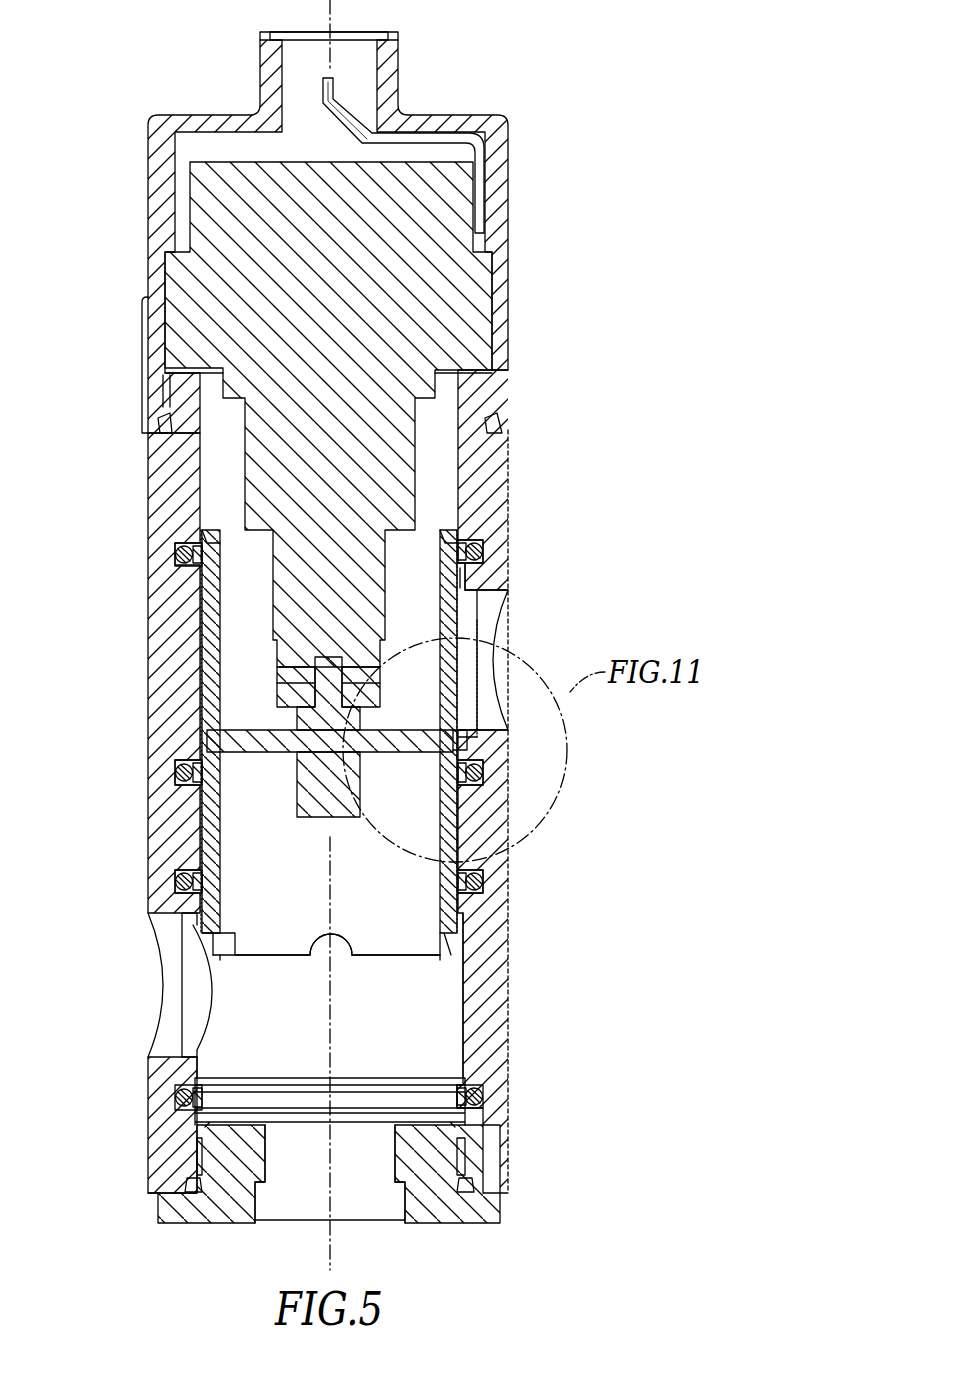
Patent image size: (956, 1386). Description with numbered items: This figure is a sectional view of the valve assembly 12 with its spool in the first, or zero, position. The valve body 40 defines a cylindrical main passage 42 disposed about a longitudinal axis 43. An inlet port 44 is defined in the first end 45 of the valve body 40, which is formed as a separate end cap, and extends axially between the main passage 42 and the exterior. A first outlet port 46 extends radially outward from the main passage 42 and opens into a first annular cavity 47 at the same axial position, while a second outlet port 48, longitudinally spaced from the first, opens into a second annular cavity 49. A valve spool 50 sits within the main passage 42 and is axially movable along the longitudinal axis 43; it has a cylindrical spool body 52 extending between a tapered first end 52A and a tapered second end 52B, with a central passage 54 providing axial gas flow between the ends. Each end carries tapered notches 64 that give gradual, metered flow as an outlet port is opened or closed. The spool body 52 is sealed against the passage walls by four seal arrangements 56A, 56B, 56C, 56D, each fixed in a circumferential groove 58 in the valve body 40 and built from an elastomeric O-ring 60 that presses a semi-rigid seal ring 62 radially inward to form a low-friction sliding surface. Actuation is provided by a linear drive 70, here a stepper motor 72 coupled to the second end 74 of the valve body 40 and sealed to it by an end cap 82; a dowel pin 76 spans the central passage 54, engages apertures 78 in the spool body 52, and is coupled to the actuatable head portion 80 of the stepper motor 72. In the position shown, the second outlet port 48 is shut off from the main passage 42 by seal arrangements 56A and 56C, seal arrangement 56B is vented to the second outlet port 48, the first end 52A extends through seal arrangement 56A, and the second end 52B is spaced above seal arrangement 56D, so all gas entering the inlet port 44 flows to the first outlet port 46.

The valve assembly 12 is at (616, 97).
The valve body 40 is at (510, 814).
The main passage 42 is at (448, 991).
The longitudinal axis 43 is at (332, 1237).
The inlet port 44 is at (285, 1220).
The first end 45 is at (131, 1196).
The first outlet port 46 is at (131, 985).
The first annular cavity 47 is at (451, 1011).
The second outlet port 48 is at (521, 622).
The second annular cavity 49 is at (450, 585).
The valve spool 50 is at (448, 712).
The spool body 52 is at (205, 634).
The first end 52A is at (211, 511).
The second end 52B is at (375, 975).
The central passage 54 is at (407, 873).
The seal arrangement 56A is at (499, 550).
The seal arrangement 56B is at (507, 772).
The seal arrangement 56C is at (499, 883).
The seal arrangement 56D is at (500, 1098).
The circumferential groove 58 is at (475, 545).
The O-ring 60 is at (180, 555).
The seal ring 62 is at (197, 545).
The tapered notch 64 is at (313, 969).
The linear drive 70 is at (457, 410).
The stepper motor 72 is at (290, 450).
The second end 74 is at (534, 428).
The dowel pin 76 is at (278, 750).
The aperture 78 is at (213, 728).
The actuatable head portion 80 is at (319, 820).
The end cap 82 is at (495, 213).